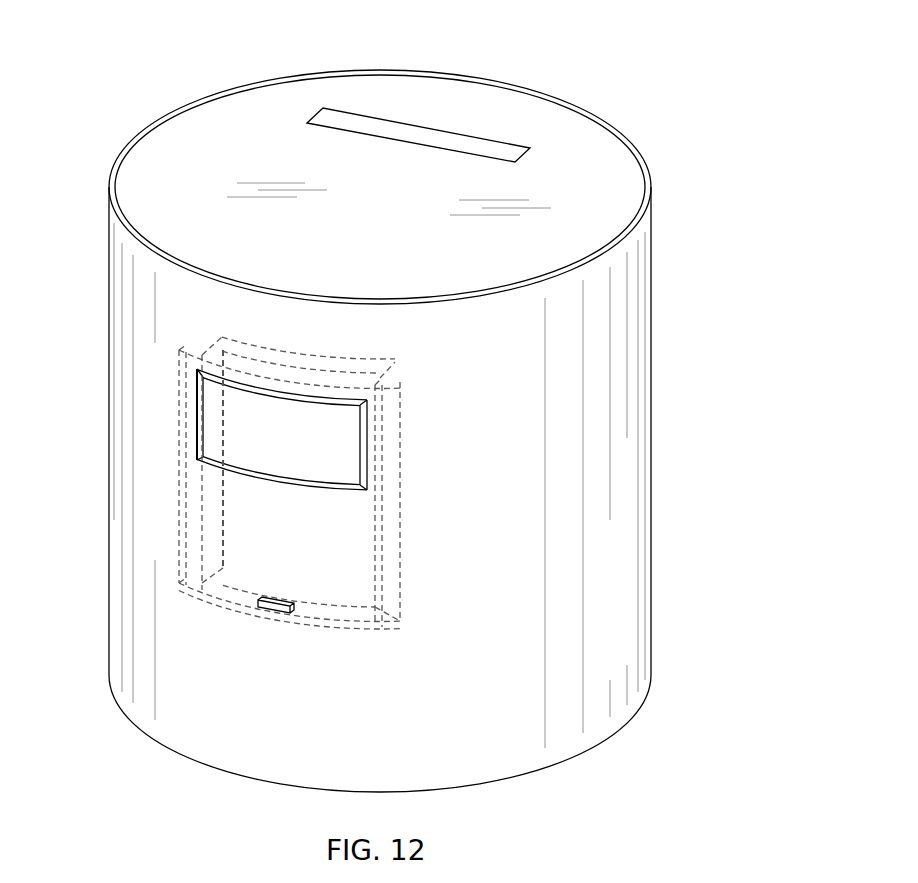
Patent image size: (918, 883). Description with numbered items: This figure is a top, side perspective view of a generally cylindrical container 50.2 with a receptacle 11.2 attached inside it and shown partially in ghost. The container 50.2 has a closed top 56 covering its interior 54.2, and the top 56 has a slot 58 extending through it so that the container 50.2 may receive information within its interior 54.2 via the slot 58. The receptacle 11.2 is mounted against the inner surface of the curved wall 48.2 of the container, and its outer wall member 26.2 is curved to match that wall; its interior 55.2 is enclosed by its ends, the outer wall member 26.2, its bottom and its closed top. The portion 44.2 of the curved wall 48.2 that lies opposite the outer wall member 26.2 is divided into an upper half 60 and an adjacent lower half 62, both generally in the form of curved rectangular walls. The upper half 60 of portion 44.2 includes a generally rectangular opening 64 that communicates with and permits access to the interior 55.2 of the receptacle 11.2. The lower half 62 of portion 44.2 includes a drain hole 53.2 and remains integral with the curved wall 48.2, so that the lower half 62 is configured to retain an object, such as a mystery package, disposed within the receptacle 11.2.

The container 50.2 is at (590, 88).
The closed top 56 is at (243, 125).
The slot 58 is at (403, 122).
The interior 54.2 is at (167, 180).
The curved wall 48.2 is at (528, 407).
The opening 64 is at (203, 390).
The upper half 60 is at (193, 429).
The lower half 62 is at (186, 526).
The receptacle 11.2 is at (360, 360).
The outer wall member 26.2 is at (304, 445).
The interior 55.2 is at (340, 461).
The drain hole 53.2 is at (275, 614).
The portion 44.2 is at (341, 553).